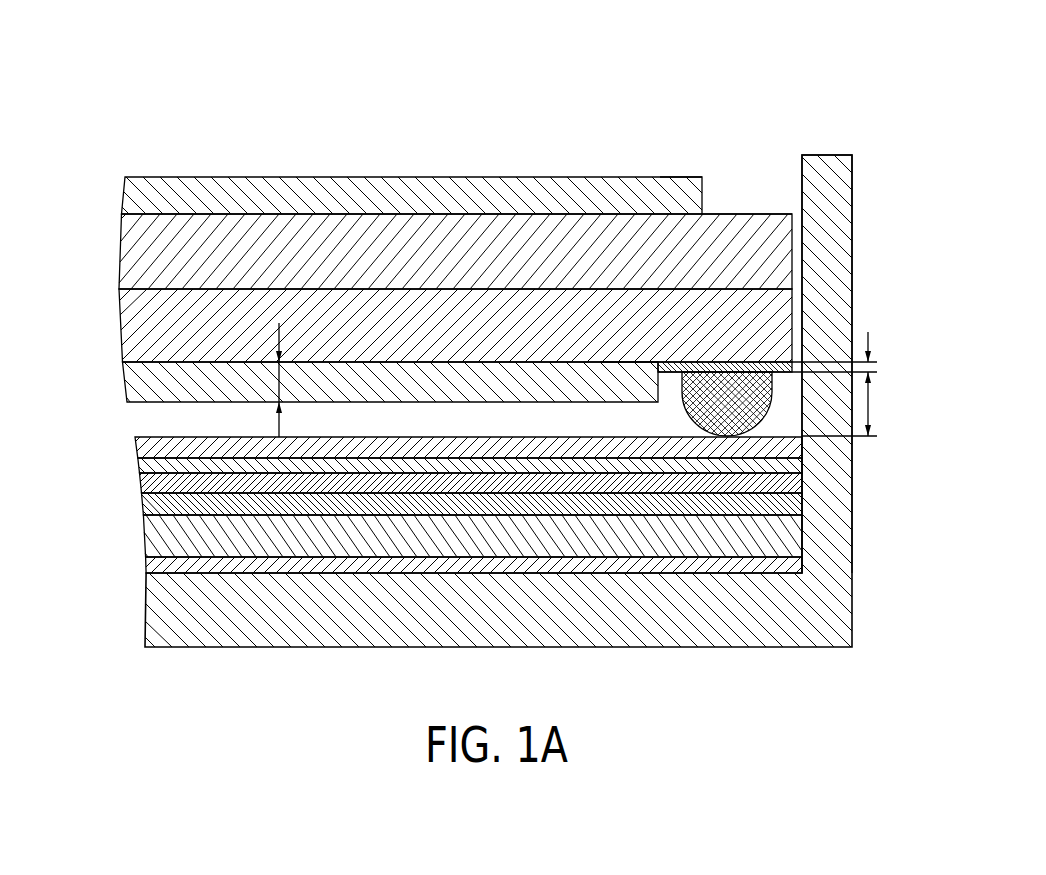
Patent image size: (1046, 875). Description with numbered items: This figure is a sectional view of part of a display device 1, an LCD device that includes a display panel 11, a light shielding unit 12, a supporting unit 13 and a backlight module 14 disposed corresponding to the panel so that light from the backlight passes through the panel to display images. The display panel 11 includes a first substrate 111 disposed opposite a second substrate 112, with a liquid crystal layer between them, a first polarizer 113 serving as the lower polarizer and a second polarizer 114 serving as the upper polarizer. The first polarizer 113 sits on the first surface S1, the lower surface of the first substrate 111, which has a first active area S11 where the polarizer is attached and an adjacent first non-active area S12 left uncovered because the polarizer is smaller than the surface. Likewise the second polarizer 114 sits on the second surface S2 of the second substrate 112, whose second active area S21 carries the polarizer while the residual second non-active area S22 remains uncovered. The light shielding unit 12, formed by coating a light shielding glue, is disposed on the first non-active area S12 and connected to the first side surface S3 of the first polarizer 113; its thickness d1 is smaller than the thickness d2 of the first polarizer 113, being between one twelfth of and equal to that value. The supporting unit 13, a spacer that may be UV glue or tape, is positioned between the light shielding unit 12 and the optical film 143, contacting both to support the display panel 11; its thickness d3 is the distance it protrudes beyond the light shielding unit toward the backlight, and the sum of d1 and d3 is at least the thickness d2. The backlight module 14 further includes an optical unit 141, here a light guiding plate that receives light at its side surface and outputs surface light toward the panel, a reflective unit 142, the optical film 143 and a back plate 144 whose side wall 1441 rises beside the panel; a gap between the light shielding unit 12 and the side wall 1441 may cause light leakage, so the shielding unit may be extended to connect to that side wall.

The display device 1 is at (186, 50).
The display panel 11 is at (55, 183).
The first substrate 111 is at (132, 333).
The second substrate 112 is at (128, 262).
The first polarizer 113 is at (134, 386).
The second polarizer 114 is at (130, 200).
The light shielding unit 12 is at (765, 362).
The supporting unit 13 is at (705, 418).
The backlight module 14 is at (80, 468).
The optical unit 141 is at (160, 536).
The reflective unit 142 is at (150, 572).
The optical film 143 is at (137, 438).
The back plate 144 is at (160, 606).
The side wall 1441 is at (838, 313).
The first surface S1 is at (605, 320).
The first active area S11 is at (630, 360).
The first non-active area S12 is at (690, 371).
The second surface S2 is at (748, 142).
The second active area S21 is at (671, 192).
The second non-active area S22 is at (730, 214).
The first side surface S3 is at (728, 371).
The thickness of the light shielding unit d1 is at (846, 355).
The thickness of the first polarizer d2 is at (263, 380).
The thickness of the supporting unit d3 is at (851, 404).